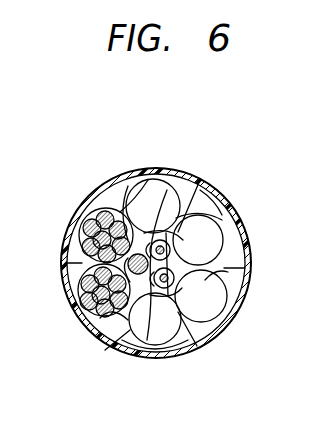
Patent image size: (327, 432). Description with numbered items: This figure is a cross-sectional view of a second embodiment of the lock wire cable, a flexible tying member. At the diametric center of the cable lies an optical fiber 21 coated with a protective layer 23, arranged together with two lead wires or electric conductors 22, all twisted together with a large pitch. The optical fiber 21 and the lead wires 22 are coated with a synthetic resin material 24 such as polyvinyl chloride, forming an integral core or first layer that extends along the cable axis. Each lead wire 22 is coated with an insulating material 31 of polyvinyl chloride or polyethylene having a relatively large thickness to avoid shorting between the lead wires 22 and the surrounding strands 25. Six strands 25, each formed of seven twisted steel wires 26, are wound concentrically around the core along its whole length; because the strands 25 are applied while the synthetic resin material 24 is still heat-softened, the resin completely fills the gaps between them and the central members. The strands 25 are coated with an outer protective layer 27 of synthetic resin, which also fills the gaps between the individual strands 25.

The optical fiber 21 is at (141, 338).
The lead wire 22 is at (200, 190).
The protective layer 23 is at (167, 190).
The synthetic resin material 24 is at (169, 251).
The strand 25 is at (137, 190).
The twisted steel wire 26 is at (82, 237).
The protective layer 27 is at (131, 277).
The insulating material 31 is at (177, 355).